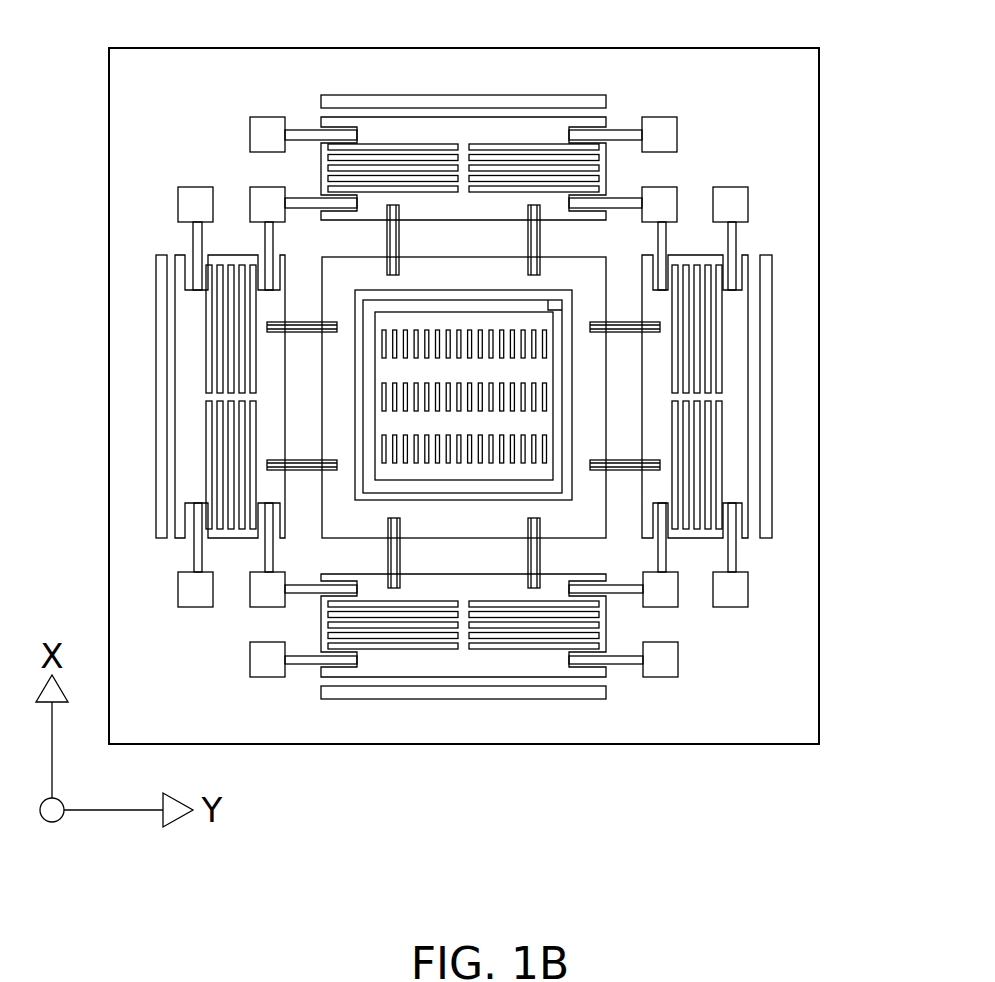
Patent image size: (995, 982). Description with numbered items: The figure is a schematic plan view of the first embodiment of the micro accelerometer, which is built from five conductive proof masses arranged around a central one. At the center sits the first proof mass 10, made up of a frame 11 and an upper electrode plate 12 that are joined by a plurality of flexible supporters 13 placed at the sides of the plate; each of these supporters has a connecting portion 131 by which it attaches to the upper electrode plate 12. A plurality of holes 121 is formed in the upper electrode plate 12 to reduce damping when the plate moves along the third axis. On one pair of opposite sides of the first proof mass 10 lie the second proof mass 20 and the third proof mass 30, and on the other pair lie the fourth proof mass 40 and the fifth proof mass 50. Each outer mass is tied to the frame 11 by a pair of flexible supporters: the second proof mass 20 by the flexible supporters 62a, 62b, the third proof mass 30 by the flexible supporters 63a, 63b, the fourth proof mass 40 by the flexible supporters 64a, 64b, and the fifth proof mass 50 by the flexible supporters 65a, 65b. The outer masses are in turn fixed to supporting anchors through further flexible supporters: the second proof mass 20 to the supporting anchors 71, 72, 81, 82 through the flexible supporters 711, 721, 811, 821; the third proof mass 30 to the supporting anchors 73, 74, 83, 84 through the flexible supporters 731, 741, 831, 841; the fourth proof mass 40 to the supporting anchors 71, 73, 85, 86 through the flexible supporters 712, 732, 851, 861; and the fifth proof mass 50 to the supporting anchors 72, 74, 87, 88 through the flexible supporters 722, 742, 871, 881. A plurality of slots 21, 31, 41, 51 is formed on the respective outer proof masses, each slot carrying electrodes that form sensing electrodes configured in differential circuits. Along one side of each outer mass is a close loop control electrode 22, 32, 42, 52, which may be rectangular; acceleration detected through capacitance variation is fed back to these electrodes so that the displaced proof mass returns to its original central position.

The first proof mass 10 is at (464, 381).
The frame 11 is at (593, 306).
The upper electrode plate 12 is at (437, 424).
The flexible supporters 13 is at (367, 358).
The holes 121 is at (415, 355).
The connecting portion 131 is at (548, 305).
The second proof mass 20 is at (463, 682).
The slots 21 is at (420, 636).
The close loop control electrode 22 is at (505, 699).
The third proof mass 30 is at (463, 113).
The slots 31 is at (418, 158).
The close loop control electrode 32 is at (503, 95).
The fourth proof mass 40 is at (171, 396).
The slots 41 is at (218, 325).
The close loop control electrode 42 is at (160, 400).
The fifth proof mass 50 is at (755, 396).
The slots 51 is at (705, 352).
The close loop control electrode 52 is at (766, 430).
The flexible supporter 62a is at (389, 555).
The flexible supporter 62b is at (528, 555).
The flexible supporter 63a is at (388, 240).
The flexible supporter 63b is at (540, 240).
The flexible supporter 64a is at (292, 327).
The flexible supporter 64b is at (292, 465).
The flexible supporter 65a is at (640, 327).
The flexible supporter 65b is at (635, 467).
The supporting anchor 71 is at (252, 597).
The flexible supporter 711 is at (302, 591).
The flexible supporter 712 is at (265, 545).
The supporting anchor 72 is at (680, 597).
The flexible supporter 721 is at (622, 591).
The flexible supporter 722 is at (658, 553).
The supporting anchor 73 is at (248, 197).
The flexible supporter 731 is at (300, 200).
The flexible supporter 732 is at (264, 250).
The supporting anchor 74 is at (679, 197).
The flexible supporter 741 is at (624, 198).
The flexible supporter 742 is at (667, 243).
The supporting anchor 81 is at (268, 678).
The flexible supporter 811 is at (305, 665).
The supporting anchor 82 is at (660, 678).
The flexible supporter 821 is at (625, 665).
The supporting anchor 83 is at (263, 121).
The flexible supporter 831 is at (300, 131).
The supporting anchor 84 is at (663, 121).
The flexible supporter 841 is at (625, 131).
The supporting anchor 85 is at (180, 598).
The flexible supporter 851 is at (197, 570).
The supporting anchor 86 is at (190, 207).
The flexible supporter 861 is at (197, 235).
The supporting anchor 87 is at (750, 588).
The flexible supporter 871 is at (736, 562).
The supporting anchor 88 is at (742, 205).
The flexible supporter 881 is at (736, 233).